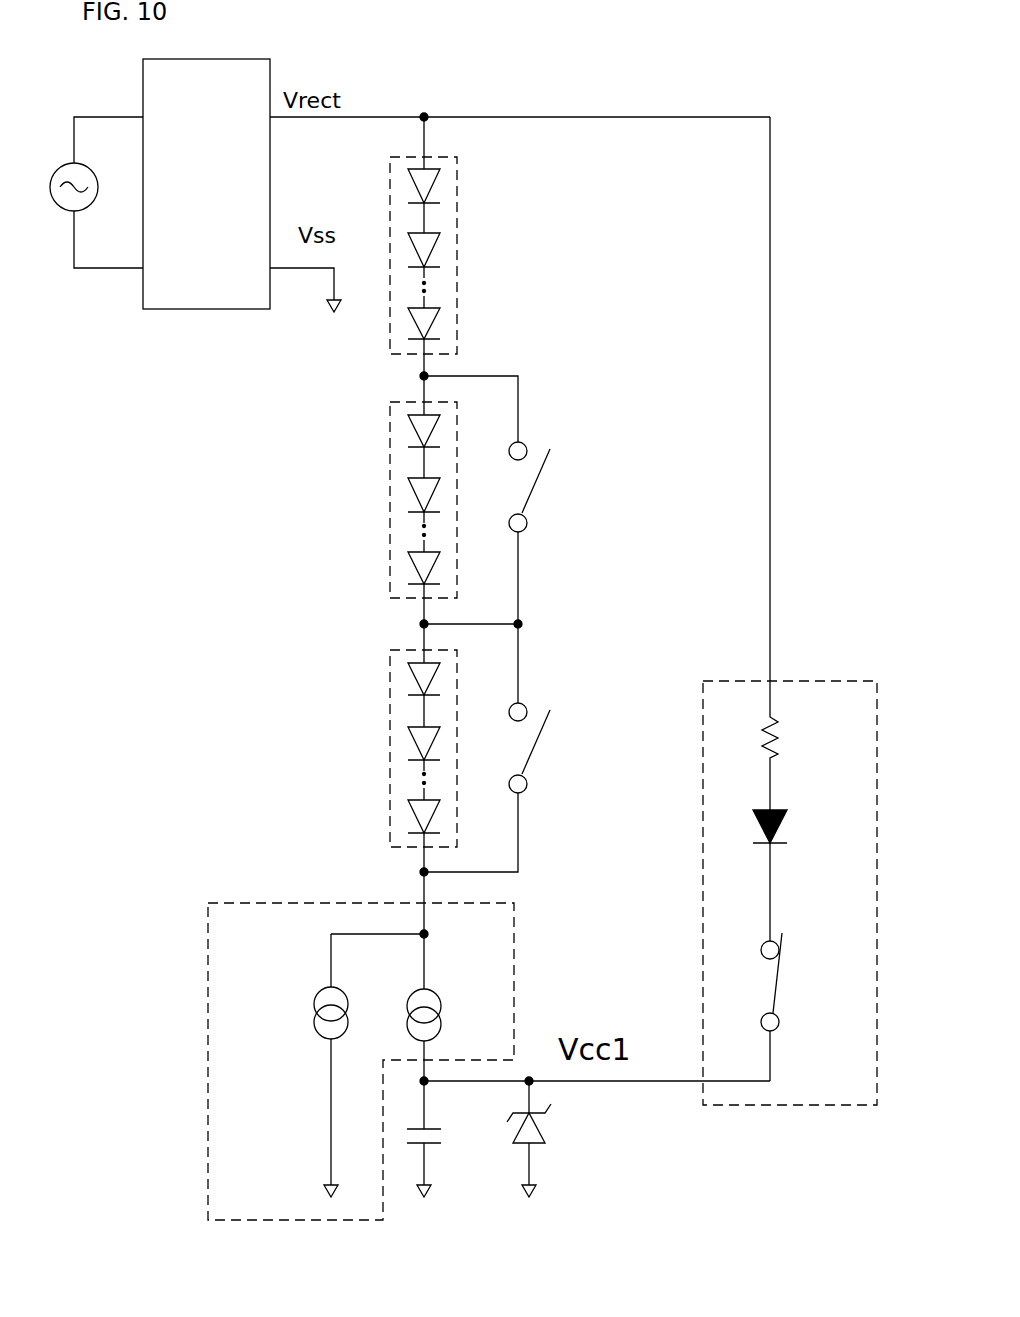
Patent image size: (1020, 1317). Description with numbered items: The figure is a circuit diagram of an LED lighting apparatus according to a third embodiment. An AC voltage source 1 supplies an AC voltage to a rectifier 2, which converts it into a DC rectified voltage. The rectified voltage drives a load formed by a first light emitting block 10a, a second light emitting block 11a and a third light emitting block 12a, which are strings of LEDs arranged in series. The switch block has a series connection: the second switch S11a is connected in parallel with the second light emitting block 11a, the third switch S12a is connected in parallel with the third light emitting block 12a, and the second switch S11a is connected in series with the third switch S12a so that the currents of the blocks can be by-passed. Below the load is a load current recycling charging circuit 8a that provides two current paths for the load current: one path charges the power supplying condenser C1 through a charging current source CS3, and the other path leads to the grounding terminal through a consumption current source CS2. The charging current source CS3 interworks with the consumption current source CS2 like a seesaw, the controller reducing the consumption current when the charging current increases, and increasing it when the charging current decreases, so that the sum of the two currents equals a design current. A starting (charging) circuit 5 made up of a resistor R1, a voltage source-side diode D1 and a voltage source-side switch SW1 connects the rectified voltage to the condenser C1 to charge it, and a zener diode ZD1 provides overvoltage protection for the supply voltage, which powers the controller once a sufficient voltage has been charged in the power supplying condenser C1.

The AC voltage source 1 is at (60, 150).
The rectifier 2 is at (150, 337).
The starting (charging) circuit 5 is at (790, 818).
The load current recycling charging circuit 8a is at (294, 1061).
The first light emitting block 10a is at (483, 241).
The second light emitting block 11a is at (372, 581).
The third light emitting block 12a is at (358, 759).
The second switch S11a is at (560, 533).
The third switch S12a is at (518, 748).
The consumption current source CS2 is at (298, 1065).
The charging current source CS3 is at (455, 1035).
The power supplying condenser C1 is at (446, 1139).
The zener diode ZD1 is at (557, 1139).
The resistor R1 is at (798, 736).
The voltage source-side diode D1 is at (794, 826).
The voltage source-side switch SW1 is at (801, 1007).